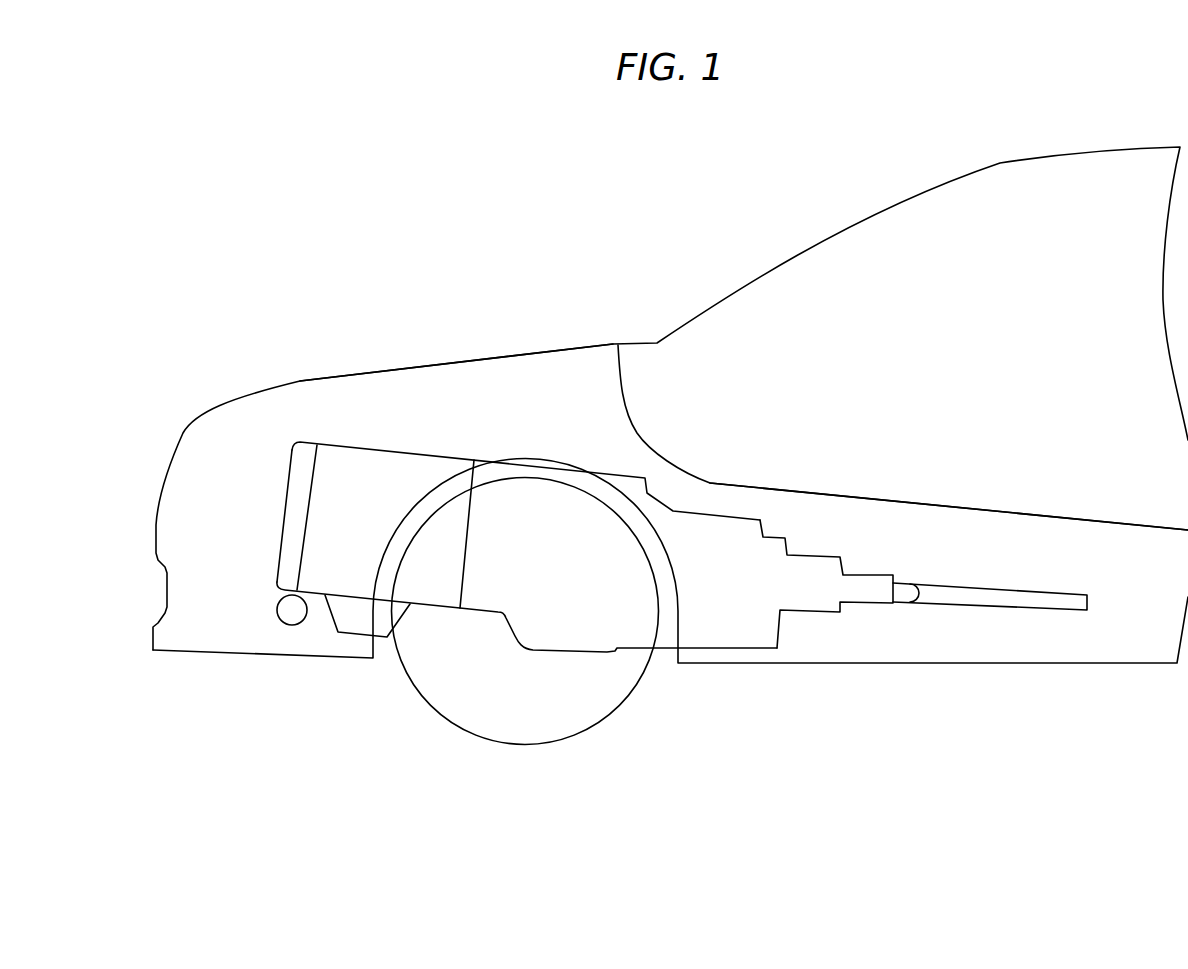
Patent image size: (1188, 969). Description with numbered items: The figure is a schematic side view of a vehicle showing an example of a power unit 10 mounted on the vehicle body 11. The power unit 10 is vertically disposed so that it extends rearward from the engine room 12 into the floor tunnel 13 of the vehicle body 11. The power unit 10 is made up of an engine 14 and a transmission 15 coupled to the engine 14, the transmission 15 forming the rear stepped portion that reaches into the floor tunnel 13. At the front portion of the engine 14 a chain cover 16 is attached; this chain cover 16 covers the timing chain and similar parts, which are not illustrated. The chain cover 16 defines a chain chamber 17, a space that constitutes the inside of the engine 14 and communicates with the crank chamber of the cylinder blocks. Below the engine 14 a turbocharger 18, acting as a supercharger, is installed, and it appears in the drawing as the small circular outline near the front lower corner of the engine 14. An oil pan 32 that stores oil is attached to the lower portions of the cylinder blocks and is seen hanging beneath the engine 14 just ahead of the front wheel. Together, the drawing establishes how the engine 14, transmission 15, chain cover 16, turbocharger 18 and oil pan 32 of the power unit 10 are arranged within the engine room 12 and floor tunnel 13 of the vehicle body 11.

The power unit 10 is at (547, 543).
The vehicle body 11 is at (227, 367).
The engine room 12 is at (567, 380).
The floor tunnel 13 is at (927, 527).
The engine 14 is at (402, 453).
The transmission 15 is at (693, 530).
The chain cover 16 is at (282, 525).
The chain chamber 17 is at (287, 563).
The turbocharger 18 is at (277, 612).
The oil pan 32 is at (362, 643).